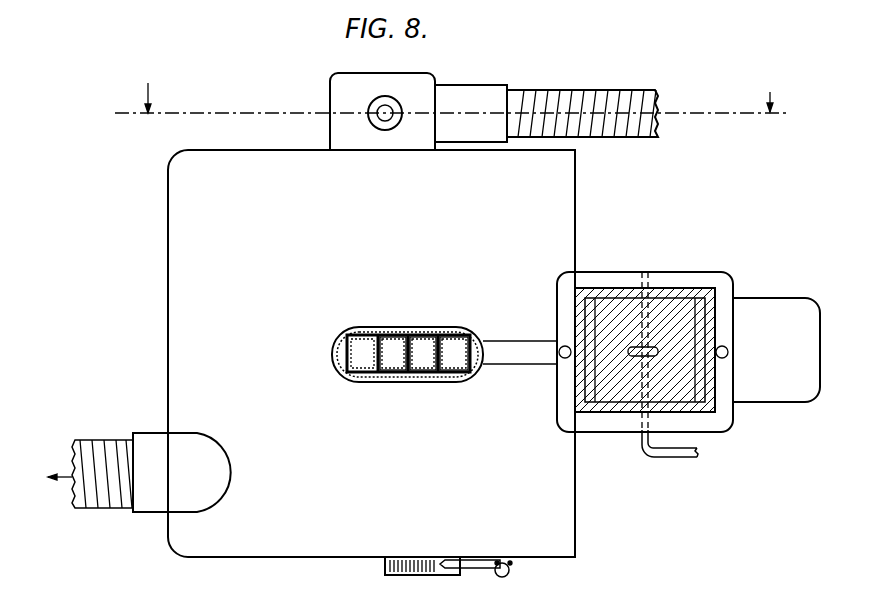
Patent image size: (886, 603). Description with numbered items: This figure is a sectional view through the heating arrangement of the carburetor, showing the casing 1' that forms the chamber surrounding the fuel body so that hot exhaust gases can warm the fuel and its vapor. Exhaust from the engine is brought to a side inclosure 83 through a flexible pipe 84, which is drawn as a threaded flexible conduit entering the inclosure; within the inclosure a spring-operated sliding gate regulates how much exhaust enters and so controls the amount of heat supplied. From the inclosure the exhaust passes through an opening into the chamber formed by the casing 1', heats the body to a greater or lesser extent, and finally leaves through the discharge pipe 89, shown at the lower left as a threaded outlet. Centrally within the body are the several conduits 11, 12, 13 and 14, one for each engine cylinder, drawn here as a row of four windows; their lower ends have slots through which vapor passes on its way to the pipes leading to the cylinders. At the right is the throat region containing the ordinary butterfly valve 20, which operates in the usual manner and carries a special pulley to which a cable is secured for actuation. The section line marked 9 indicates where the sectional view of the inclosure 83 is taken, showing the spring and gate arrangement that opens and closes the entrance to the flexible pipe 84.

The casing 1' is at (371, 353).
The section line 9- 9 is at (452, 104).
The conduit 11 is at (360, 345).
The conduit 12 is at (398, 345).
The conduit 13 is at (430, 345).
The conduit 14 is at (462, 347).
The butterfly valve 20 is at (688, 364).
The side inclosure 83 is at (418, 82).
The flexible pipe 84 is at (572, 95).
The discharge pipe 89 is at (112, 502).